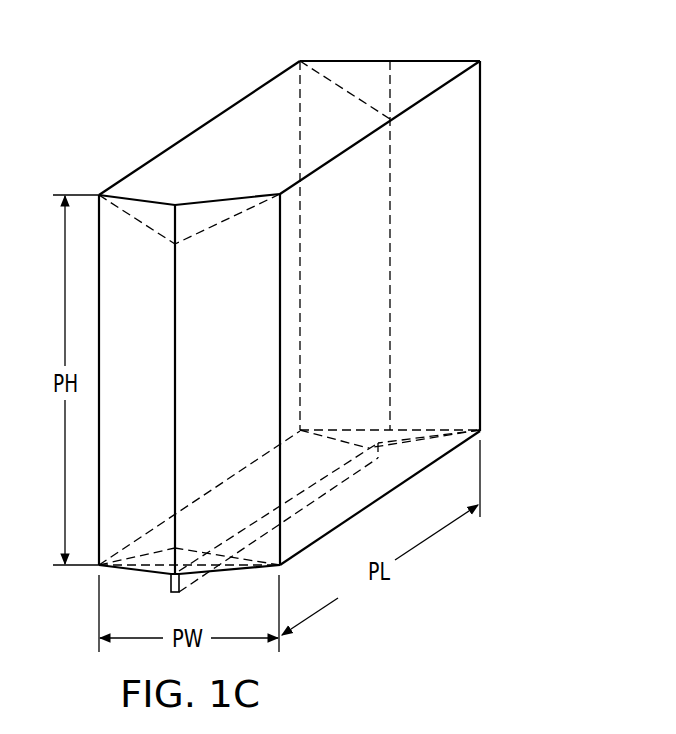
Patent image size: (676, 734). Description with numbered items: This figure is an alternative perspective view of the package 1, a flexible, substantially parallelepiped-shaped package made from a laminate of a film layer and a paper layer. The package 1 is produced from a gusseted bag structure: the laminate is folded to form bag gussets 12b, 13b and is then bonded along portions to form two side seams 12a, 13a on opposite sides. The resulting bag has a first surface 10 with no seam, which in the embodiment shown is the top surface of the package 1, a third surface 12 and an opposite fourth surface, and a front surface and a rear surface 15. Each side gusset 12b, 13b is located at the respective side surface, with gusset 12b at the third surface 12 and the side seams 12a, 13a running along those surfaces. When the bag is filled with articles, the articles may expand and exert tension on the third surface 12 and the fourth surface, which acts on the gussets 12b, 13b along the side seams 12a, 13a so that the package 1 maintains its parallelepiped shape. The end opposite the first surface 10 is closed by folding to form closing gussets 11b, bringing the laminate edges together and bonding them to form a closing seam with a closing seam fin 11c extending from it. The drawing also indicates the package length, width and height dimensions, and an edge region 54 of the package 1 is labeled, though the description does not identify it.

The package 1 is at (523, 240).
The first surface 10 is at (218, 130).
The rear surface 15 is at (137, 133).
The bag gusset 13b is at (363, 80).
The second side seam 13a is at (401, 153).
The bag gusset 12b is at (203, 218).
The third surface 12 is at (152, 401).
The first side seam 12a is at (176, 412).
The side edge 54 is at (472, 327).
The closing gusset 11b is at (165, 553).
The closing seam fin 11c is at (185, 582).